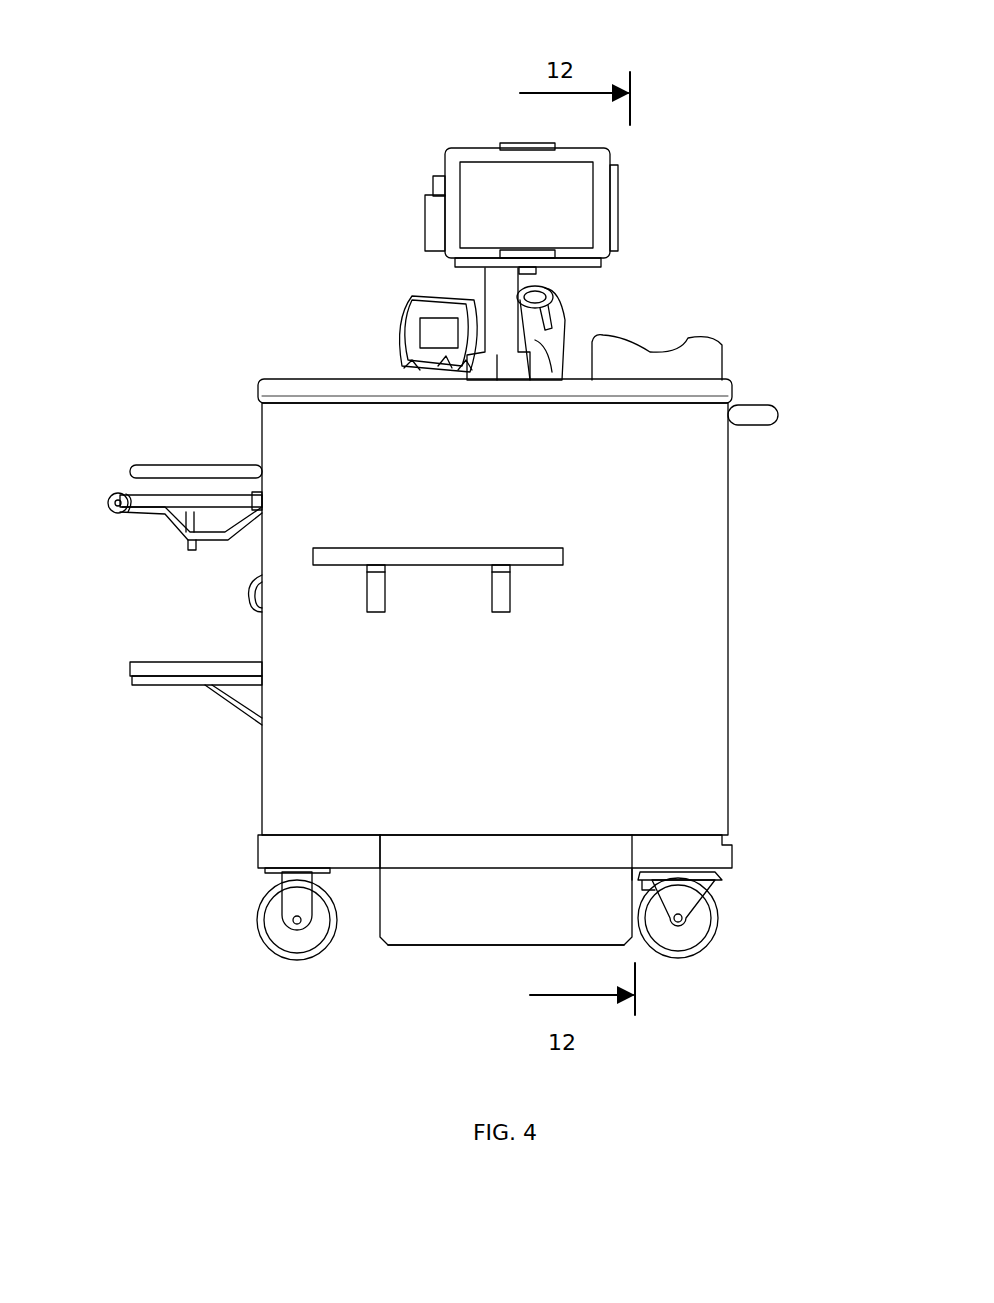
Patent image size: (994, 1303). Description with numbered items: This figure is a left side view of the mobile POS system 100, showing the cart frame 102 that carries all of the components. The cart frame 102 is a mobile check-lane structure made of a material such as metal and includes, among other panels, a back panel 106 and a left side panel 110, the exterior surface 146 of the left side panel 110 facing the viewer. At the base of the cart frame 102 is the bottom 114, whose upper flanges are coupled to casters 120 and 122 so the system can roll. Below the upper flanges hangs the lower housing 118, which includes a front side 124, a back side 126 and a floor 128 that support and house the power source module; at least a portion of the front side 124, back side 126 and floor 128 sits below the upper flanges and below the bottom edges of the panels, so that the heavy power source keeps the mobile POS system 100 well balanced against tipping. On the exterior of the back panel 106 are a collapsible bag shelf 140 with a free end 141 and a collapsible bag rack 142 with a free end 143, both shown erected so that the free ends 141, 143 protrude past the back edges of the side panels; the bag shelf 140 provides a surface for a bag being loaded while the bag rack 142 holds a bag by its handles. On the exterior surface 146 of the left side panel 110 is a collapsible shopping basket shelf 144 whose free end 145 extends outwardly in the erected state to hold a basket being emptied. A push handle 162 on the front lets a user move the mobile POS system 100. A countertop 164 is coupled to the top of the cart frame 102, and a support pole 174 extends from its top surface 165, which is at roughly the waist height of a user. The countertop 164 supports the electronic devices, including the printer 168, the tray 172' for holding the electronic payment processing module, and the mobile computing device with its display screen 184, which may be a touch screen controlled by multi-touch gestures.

The mobile POS system 100 is at (276, 224).
The cart frame 102 is at (540, 574).
The back panel 106 is at (562, 187).
The left side panel 110 is at (684, 634).
The bottom 114 is at (404, 958).
The lower housing 118 is at (504, 922).
The caster 120 is at (284, 950).
The caster 122 is at (690, 952).
The front side 124 is at (640, 896).
The back side 126 is at (380, 893).
The floor 128 is at (578, 948).
The collapsible bag shelf 140 is at (149, 662).
The free end 141 is at (125, 668).
The collapsible bag rack 142 is at (143, 465).
The free end 143 is at (140, 468).
The collapsible shopping basket shelf 144 is at (499, 575).
The free end 145 is at (545, 568).
The exterior surface 146 is at (510, 705).
The push handle 162 is at (766, 410).
The countertop 164 is at (268, 396).
The top surface 165 is at (318, 378).
The printer 168 is at (408, 322).
The tray 172' is at (672, 320).
The support pole 174 is at (495, 286).
The display screen 184 is at (500, 185).